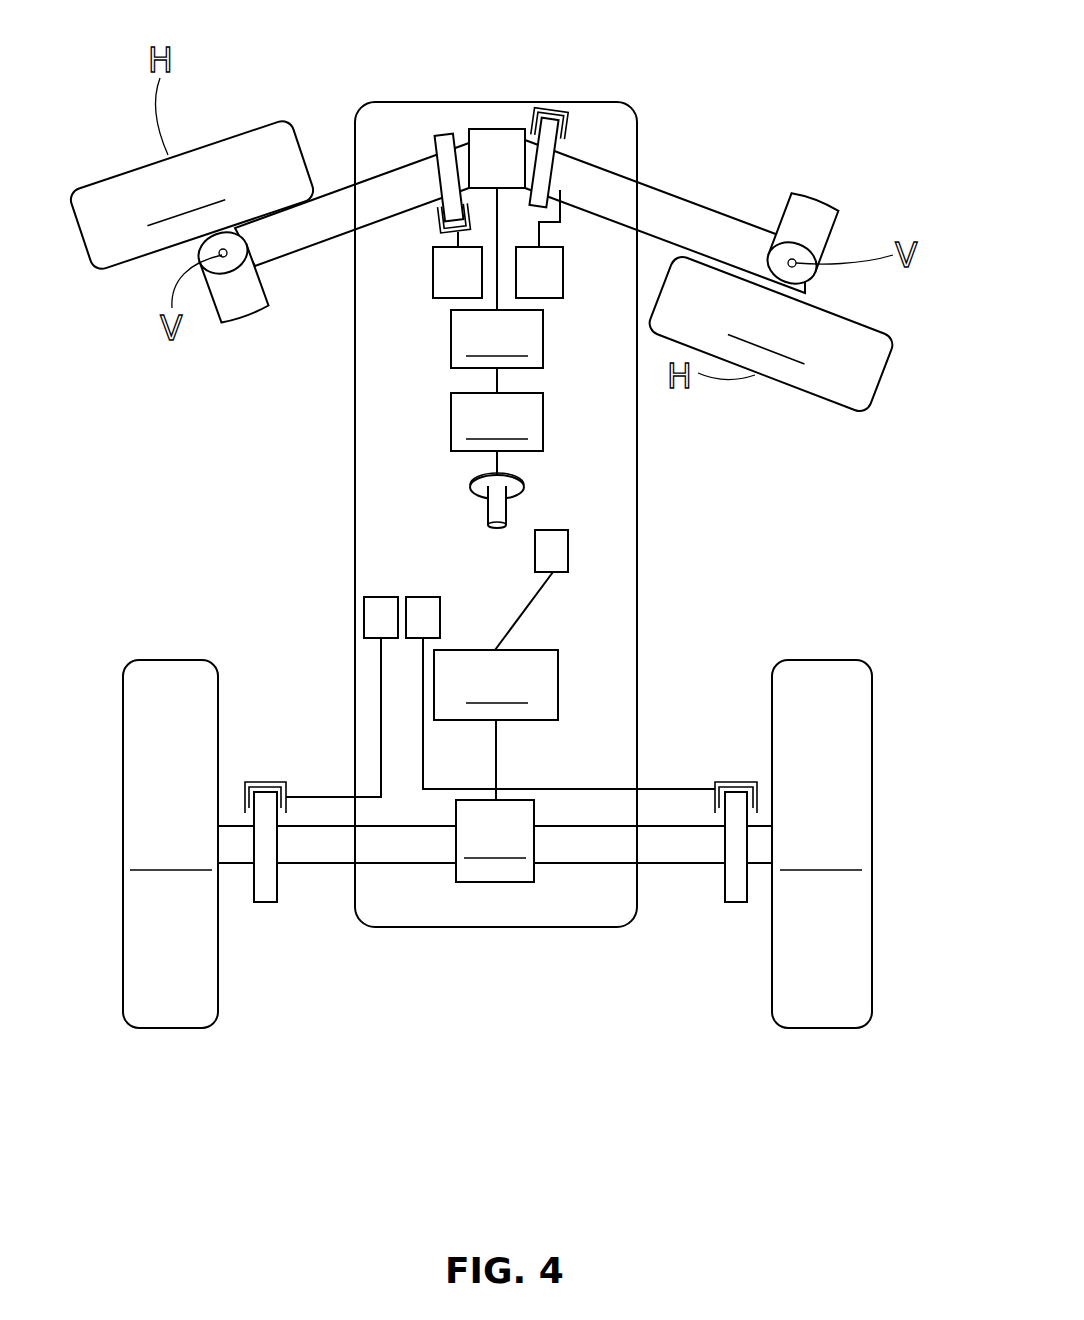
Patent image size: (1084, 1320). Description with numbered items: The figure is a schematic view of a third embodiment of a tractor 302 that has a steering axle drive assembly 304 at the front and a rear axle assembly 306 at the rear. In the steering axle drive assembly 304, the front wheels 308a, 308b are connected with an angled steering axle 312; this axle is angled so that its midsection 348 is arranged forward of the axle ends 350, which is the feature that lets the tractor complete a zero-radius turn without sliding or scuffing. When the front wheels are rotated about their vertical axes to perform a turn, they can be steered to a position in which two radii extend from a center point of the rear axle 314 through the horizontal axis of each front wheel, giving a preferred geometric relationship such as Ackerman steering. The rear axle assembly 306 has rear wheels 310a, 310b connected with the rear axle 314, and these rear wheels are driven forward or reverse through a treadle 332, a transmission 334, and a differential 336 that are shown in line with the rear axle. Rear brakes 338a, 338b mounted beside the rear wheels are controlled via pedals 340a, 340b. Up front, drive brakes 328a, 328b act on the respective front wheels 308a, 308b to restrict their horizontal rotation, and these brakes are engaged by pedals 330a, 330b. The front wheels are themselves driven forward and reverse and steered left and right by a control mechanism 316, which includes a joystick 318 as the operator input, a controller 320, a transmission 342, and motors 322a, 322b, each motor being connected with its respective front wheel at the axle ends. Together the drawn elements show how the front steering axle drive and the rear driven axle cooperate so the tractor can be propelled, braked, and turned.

The tractor 302 is at (178, 456).
The steering axle drive assembly 304 is at (712, 80).
The rear axle assembly 306 is at (362, 1025).
The wheel 308a is at (192, 195).
The wheel 308b is at (771, 333).
The wheel 310a is at (170, 844).
The wheel 310b is at (822, 844).
The angled steering axle 312 is at (378, 186).
The rear axle 314 is at (678, 847).
The control mechanism 316 is at (664, 430).
The joystick 318 is at (498, 510).
The controller 320 is at (497, 422).
The motor 322a is at (243, 297).
The motor 322b is at (815, 222).
The drive brake 328a is at (445, 140).
The drive brake 328b is at (547, 125).
The pedal 330a is at (443, 290).
The pedal 330b is at (552, 268).
The treadle 332 is at (555, 553).
The transmission 334 is at (496, 685).
The differential 336 is at (495, 841).
The rear brake 338a is at (267, 887).
The rear brake 338b is at (738, 885).
The pedal 340a is at (372, 617).
The pedal 340b is at (422, 628).
The transmission 342 is at (497, 339).
The midsection 348 is at (530, 153).
The axle end 350 is at (245, 232).